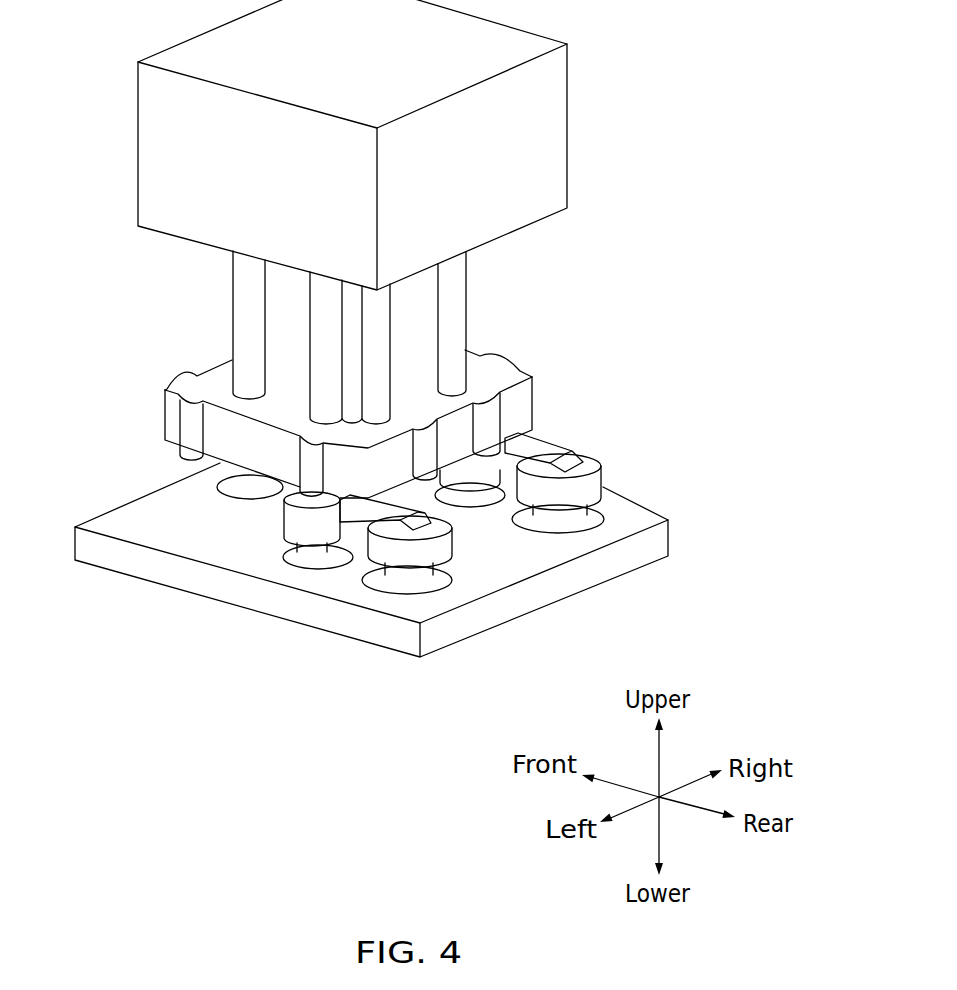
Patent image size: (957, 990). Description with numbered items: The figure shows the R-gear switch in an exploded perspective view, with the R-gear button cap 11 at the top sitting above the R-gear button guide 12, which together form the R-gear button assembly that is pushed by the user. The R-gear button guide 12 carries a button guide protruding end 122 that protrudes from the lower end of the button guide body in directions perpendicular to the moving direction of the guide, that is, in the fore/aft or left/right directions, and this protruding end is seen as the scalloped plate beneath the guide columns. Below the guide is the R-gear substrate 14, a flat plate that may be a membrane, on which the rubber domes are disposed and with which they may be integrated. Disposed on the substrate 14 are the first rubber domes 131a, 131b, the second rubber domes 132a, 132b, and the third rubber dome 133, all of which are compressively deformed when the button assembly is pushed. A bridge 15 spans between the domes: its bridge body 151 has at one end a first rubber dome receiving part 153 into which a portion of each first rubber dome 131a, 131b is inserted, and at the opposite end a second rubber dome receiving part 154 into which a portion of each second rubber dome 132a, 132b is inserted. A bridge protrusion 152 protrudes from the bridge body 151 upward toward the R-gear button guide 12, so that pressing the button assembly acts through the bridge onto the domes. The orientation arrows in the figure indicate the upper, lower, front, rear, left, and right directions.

The R-gear button cap 11 is at (559, 120).
The R-gear button guide 12 is at (500, 291).
The button guide protruding end 122 is at (523, 403).
The R-gear substrate 14 is at (110, 524).
The bridge 15 is at (632, 473).
The first rubber dome 131a is at (300, 553).
The first rubber dome 131b is at (466, 487).
The second rubber dome 132a is at (383, 584).
The second rubber dome 132b is at (575, 525).
The third rubber dome 133 is at (233, 486).
The bridge body 151 is at (352, 524).
The bridge protrusion 152 is at (316, 566).
The first rubber dome receiving part 153 is at (293, 523).
The second rubber dome receiving part 154 is at (422, 558).